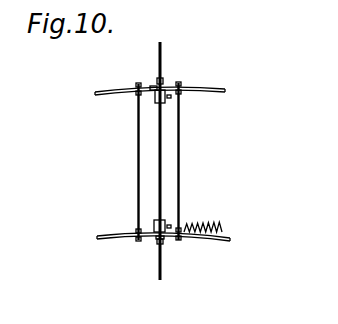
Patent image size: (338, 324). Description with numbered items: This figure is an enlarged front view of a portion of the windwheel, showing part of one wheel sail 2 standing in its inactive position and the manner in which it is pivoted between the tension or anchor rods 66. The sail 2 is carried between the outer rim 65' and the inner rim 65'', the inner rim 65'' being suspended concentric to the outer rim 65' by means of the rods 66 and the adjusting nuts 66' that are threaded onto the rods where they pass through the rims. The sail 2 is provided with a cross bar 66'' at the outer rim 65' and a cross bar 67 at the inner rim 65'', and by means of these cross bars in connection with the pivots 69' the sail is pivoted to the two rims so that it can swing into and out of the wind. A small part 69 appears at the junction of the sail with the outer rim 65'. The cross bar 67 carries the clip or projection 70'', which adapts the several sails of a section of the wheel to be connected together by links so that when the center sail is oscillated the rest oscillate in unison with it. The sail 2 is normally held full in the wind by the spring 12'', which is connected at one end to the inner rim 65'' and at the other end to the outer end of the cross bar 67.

The wheel sail 2 is at (162, 162).
The tension or anchor rods 66 is at (158, 161).
The outer rim 65' is at (155, 79).
The inner rim 65'' is at (174, 238).
The adjusting nuts 66' is at (166, 181).
The cross bar 66'' is at (189, 107).
The cross bar 67 is at (163, 220).
The collar at upper bar 69 is at (142, 73).
The pivots 69' is at (162, 165).
The clip or projection 70'' is at (182, 252).
The spring 12'' is at (219, 214).